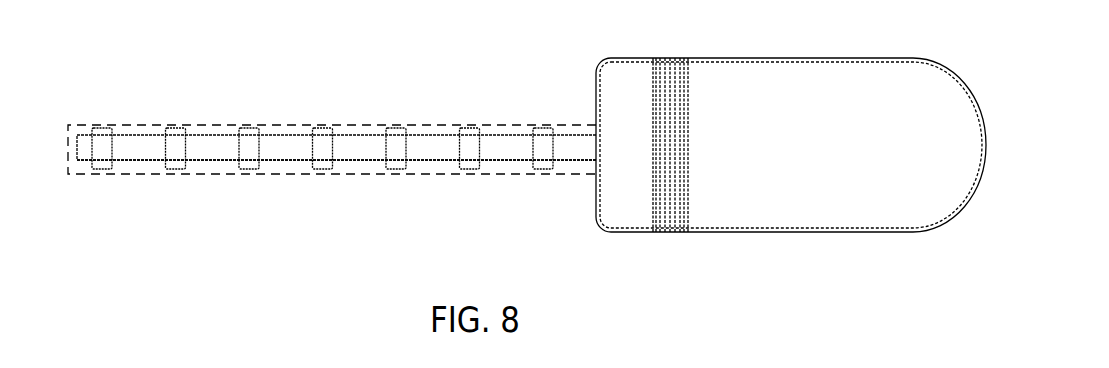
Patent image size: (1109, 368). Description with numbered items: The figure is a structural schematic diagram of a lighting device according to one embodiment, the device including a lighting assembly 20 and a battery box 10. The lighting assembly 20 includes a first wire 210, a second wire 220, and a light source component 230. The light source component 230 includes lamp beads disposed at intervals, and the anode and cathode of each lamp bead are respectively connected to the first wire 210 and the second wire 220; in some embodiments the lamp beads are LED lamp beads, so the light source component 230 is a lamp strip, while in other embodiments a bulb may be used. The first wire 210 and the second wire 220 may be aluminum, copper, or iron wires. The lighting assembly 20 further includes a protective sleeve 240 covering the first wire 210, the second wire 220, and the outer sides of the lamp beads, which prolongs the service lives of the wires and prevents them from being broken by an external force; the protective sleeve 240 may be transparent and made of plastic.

The battery box 10 is at (824, 43).
The lighting assembly 20 is at (332, 163).
The first wire 210 is at (368, 135).
The second wire 220 is at (365, 160).
The light source component 230 is at (548, 169).
The protective sleeve 240 is at (283, 174).